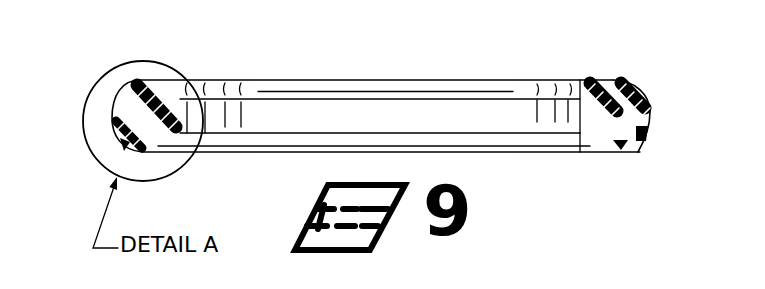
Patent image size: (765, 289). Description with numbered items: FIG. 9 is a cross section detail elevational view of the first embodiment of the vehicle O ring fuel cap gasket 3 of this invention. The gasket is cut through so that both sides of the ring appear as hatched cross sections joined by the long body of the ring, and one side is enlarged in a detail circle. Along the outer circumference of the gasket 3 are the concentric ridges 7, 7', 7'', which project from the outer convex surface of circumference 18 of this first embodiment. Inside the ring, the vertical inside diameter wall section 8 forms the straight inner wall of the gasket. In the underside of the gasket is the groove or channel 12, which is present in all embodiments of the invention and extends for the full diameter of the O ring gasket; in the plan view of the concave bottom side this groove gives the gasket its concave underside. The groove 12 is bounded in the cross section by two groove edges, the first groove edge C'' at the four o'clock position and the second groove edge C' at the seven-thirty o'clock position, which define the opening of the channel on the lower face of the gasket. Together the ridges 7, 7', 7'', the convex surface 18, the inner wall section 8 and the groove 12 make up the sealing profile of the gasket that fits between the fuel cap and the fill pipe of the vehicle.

The vehicle O ring fuel cap gasket 3 is at (641, 96).
The ridge on outer circumference 7 is at (364, 130).
The ridge on outer circumference 7' is at (367, 155).
The ridge on outer circumference 7'' is at (366, 176).
The vertical inside diameter wall section 8 is at (390, 116).
The groove or channel 12 is at (133, 81).
The outer convex surface of circumference 18 is at (120, 95).
The second groove edge C' is at (391, 182).
The first groove edge C'' is at (383, 163).